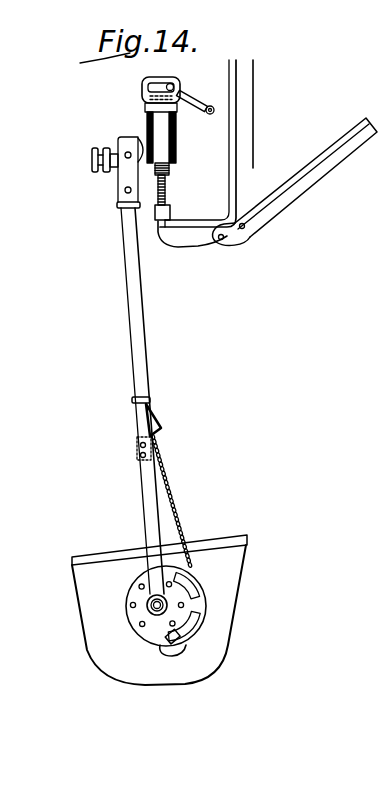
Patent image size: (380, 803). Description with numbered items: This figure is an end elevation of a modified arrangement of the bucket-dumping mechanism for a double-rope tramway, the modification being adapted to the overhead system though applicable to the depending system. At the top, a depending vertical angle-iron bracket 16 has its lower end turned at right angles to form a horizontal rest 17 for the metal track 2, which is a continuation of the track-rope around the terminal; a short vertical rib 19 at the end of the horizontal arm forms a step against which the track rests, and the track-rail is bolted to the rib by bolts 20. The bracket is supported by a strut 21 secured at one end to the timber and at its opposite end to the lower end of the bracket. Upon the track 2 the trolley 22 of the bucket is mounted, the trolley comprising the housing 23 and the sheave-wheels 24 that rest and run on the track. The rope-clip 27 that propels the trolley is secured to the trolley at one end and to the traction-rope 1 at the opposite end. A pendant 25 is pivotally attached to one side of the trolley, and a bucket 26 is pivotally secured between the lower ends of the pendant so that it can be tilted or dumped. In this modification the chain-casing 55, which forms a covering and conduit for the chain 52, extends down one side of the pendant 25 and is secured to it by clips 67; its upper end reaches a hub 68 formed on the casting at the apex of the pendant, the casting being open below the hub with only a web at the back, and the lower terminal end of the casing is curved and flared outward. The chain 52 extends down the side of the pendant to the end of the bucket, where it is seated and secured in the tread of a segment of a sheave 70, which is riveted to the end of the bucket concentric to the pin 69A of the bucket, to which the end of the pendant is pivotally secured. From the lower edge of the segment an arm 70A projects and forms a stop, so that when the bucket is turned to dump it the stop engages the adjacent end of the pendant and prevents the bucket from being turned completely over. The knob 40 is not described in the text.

The traction-rope 1 is at (211, 106).
The track rope or rail 2 is at (167, 197).
The angle-iron bracket 16 is at (240, 98).
The horizontal rest 17 is at (197, 236).
The vertical rib 19 is at (172, 218).
The bolt 20 is at (170, 210).
The strut 21 is at (300, 181).
The trolley 22 is at (140, 101).
The housing 23 is at (177, 127).
The sheave-wheel 24 is at (170, 172).
The pendant 25 is at (132, 327).
The bucket 26 is at (90, 615).
The rope-clip 27 is at (183, 97).
The knob 40 is at (91, 158).
The chain 52 is at (181, 521).
The casing 55 is at (159, 418).
The clip 67 is at (121, 205).
The hub 68 is at (114, 180).
The pin 69A is at (152, 607).
The segment of a sheave 70 is at (207, 601).
The arm 70A is at (182, 641).